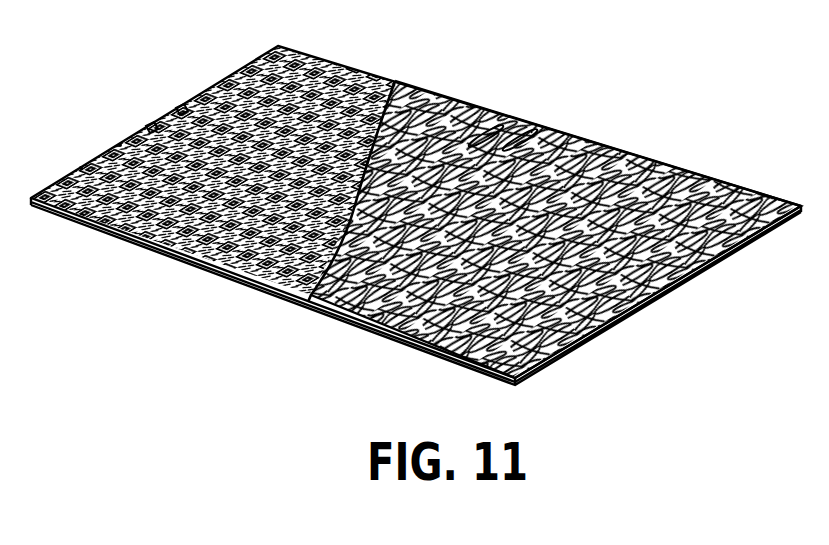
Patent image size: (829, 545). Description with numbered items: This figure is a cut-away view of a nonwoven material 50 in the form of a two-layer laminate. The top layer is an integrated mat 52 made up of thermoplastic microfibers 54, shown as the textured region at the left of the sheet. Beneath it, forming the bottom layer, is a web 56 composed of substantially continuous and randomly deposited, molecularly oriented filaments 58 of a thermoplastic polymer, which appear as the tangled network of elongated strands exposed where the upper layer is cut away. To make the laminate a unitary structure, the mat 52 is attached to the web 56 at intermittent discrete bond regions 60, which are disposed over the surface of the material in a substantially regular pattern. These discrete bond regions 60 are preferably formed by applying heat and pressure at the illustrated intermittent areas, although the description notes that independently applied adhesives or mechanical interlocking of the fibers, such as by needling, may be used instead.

The nonwoven material 50 is at (455, 70).
The integrated mat 52 is at (315, 53).
The thermoplastic microfibers 54 is at (173, 98).
The web 56 is at (623, 147).
The molecularly oriented filaments 58 is at (520, 127).
The discrete bond regions 60 is at (112, 136).